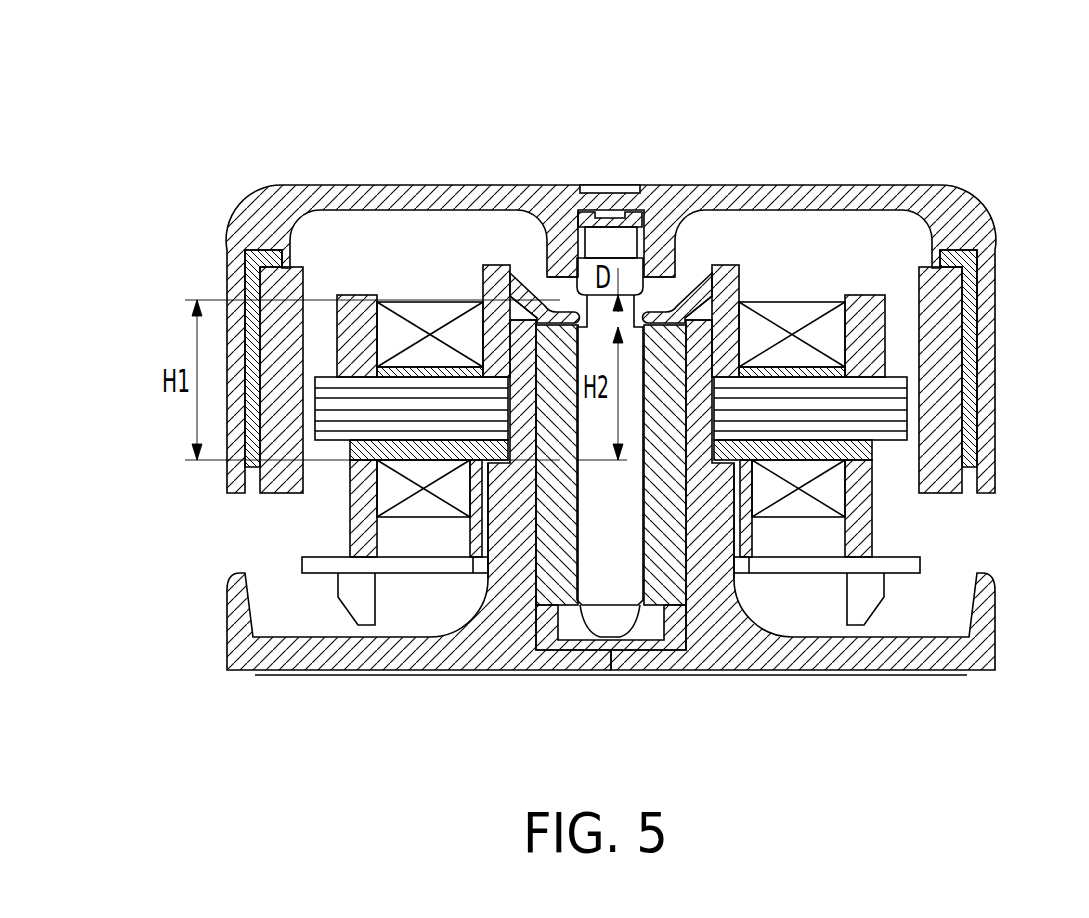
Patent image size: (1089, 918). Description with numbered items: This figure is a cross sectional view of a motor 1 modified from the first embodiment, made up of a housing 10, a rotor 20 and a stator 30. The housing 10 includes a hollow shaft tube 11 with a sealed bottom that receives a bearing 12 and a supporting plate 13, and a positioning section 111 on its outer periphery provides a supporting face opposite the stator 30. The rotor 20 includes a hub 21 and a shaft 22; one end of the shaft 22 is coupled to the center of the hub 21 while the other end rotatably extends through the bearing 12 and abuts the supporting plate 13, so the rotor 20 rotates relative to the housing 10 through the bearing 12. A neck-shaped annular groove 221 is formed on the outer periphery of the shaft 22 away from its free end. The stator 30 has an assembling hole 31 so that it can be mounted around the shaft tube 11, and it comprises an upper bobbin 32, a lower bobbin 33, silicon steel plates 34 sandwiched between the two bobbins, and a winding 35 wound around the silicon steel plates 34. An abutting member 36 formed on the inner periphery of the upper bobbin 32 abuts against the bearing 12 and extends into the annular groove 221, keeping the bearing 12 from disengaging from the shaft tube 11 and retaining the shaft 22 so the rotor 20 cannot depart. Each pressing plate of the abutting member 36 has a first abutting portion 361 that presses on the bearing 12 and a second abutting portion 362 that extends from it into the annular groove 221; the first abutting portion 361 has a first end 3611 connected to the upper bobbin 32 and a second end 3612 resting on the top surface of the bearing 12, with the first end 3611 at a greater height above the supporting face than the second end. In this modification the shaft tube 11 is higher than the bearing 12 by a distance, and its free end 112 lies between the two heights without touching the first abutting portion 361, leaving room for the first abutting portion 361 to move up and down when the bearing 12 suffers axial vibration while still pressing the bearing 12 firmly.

The motor 1 is at (155, 203).
The housing 10 is at (993, 624).
The shaft tube 11 is at (707, 348).
The positioning section 111 is at (700, 373).
The free end 112 is at (410, 303).
The bearing 12 is at (545, 555).
The supporting plate 13 is at (543, 628).
The rotor 20 is at (1002, 298).
The hub 21 is at (723, 187).
The shaft 22 is at (616, 417).
The annular groove 221 is at (590, 300).
The stator 30 is at (531, 318).
The assembling hole 31 is at (653, 292).
The upper bobbin 32 is at (270, 292).
The lower bobbin 33 is at (353, 520).
The silicon steel plates 34 is at (320, 413).
The winding 35 is at (342, 322).
The abutting member 36 is at (583, 194).
The first abutting portion 361 is at (497, 167).
The first end 3611 is at (527, 305).
The second arm 3612 is at (568, 308).
The second abutting portion 362 is at (560, 305).